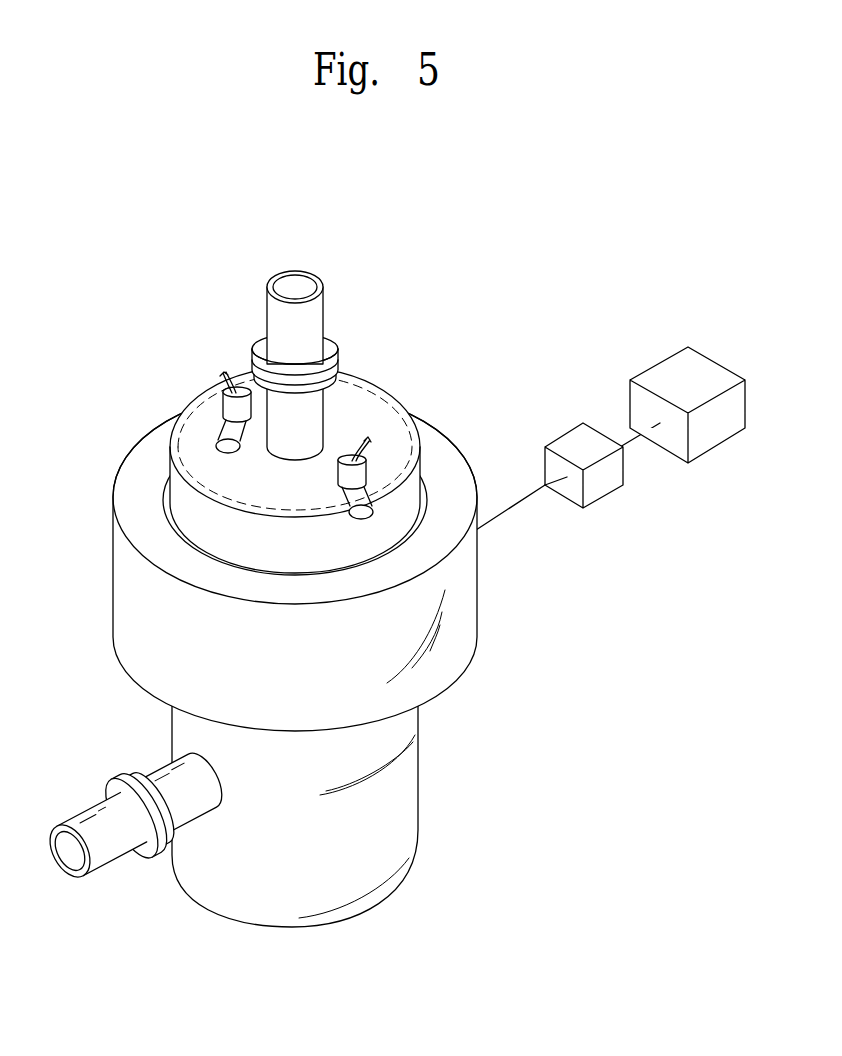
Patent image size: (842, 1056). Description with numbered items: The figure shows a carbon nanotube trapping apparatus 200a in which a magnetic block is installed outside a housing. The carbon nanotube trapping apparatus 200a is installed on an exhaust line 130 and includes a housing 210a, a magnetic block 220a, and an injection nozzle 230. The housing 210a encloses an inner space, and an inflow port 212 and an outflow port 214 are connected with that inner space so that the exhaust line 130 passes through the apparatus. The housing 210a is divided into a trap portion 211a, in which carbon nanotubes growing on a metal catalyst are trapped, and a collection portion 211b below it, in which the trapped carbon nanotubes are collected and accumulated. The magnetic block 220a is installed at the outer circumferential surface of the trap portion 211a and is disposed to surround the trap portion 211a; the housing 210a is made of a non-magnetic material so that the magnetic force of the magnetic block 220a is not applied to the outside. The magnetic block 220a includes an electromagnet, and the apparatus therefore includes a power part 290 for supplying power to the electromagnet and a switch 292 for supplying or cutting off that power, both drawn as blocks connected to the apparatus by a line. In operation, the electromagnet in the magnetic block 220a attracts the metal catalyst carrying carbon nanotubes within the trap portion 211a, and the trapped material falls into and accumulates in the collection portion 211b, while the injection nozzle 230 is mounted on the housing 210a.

The exhaust line 130 is at (308, 327).
The carbon nanotube trapping apparatus 200a is at (134, 258).
The housing 210a is at (264, 702).
The trap portion 211a is at (95, 453).
The collection portion 211b is at (435, 735).
The inflow port 212 is at (183, 790).
The outflow port 214 is at (308, 413).
The magnetic block 220a is at (440, 428).
The injection nozzle 230 is at (219, 403).
The power part 290 is at (670, 372).
The switch 292 is at (575, 442).